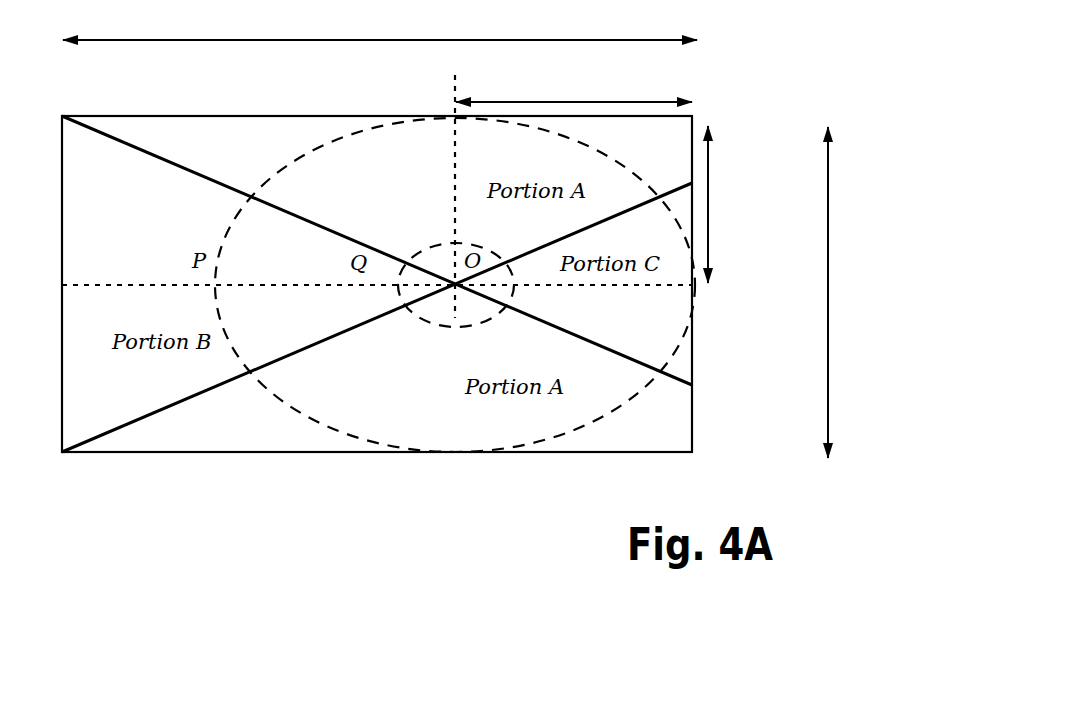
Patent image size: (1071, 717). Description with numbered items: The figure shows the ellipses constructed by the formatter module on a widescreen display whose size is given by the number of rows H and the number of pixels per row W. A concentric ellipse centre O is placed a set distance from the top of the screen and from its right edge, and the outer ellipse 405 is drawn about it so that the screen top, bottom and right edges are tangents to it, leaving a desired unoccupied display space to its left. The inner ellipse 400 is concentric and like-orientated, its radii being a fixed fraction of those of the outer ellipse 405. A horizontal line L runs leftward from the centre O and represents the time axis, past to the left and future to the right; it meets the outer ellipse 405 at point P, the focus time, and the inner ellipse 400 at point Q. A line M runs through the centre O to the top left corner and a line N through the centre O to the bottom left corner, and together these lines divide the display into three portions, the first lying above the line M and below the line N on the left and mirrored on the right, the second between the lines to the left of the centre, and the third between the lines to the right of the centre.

The inner ellipse 400 is at (423, 248).
The outer ellipse 405 is at (297, 155).
The line M is at (377, 250).
The line N is at (377, 317).
The line L is at (377, 266).
The number of pixels per row W is at (380, 25).
The number of rows H is at (842, 292).